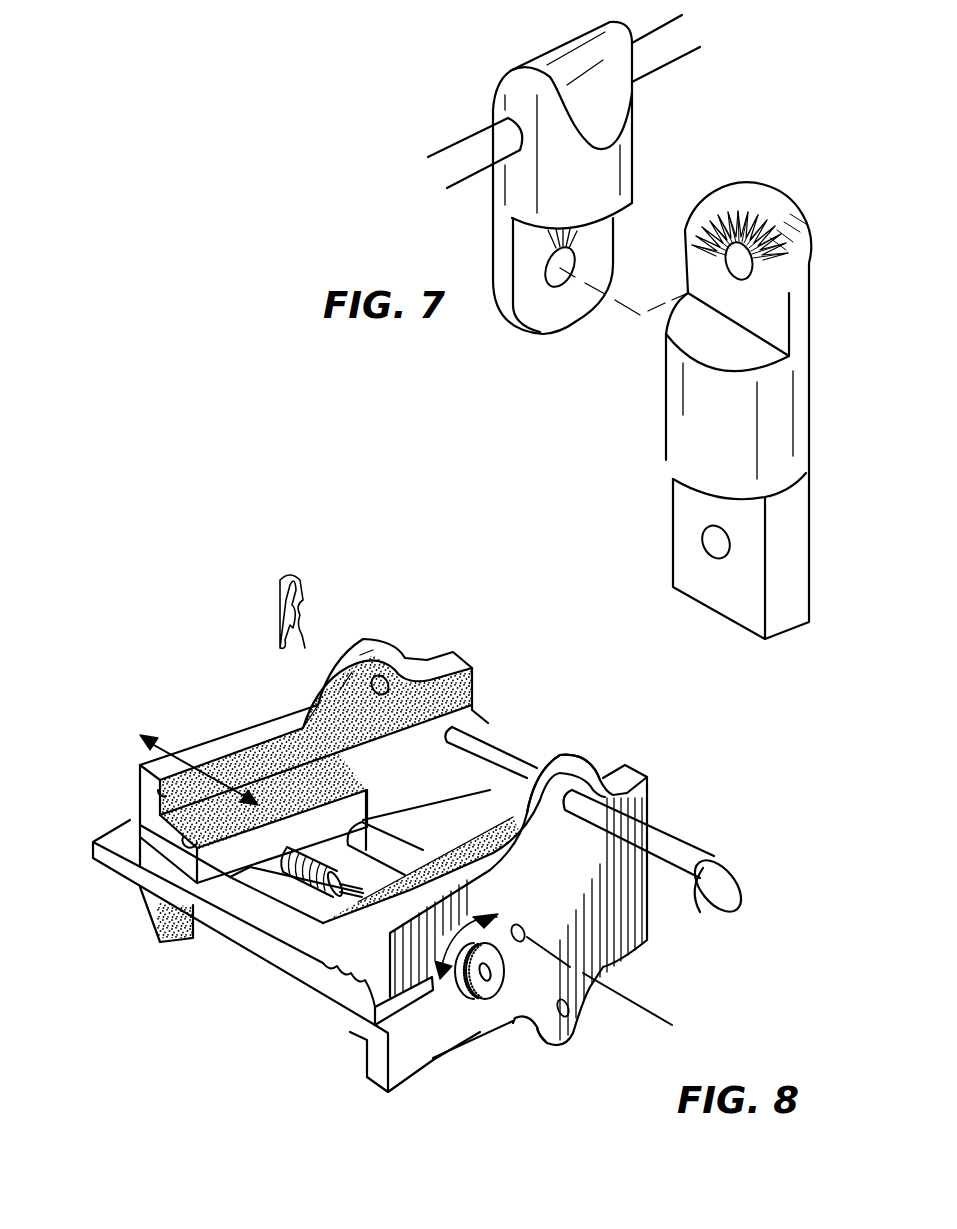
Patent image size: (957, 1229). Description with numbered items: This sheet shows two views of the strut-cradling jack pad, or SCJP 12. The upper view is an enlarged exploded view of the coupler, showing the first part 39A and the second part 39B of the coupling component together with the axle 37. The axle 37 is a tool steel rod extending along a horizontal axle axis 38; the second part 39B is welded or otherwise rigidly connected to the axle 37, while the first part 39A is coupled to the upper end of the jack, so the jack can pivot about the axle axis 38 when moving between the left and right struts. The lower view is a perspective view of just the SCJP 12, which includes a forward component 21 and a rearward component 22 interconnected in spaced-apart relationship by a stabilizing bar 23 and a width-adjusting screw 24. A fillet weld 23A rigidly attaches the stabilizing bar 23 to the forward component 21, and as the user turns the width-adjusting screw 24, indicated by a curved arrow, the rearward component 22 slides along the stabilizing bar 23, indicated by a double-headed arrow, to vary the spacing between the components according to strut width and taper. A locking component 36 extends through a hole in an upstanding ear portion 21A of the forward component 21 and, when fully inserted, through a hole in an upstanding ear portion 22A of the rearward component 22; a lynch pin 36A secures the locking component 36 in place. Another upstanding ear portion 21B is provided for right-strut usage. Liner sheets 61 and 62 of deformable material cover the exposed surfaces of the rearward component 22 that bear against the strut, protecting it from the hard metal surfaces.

In FIG. 8, the SCJP 12 is at (150, 562).
In FIG. 8, the forward component 21 is at (640, 768).
In FIG. 8, the upstanding ear portion 21A is at (570, 757).
In FIG. 8, the upstanding ear portion 21B is at (550, 1045).
In FIG. 8, the rearward component 22 is at (458, 652).
In FIG. 8, the upstanding ear portion 22A is at (365, 643).
In FIG. 8, the stabilizing bar 23 is at (105, 860).
In FIG. 8, the fillet weld 23A is at (347, 977).
In FIG. 8, the width-adjusting screw 24 is at (480, 990).
In FIG. 8, the locking component 36 is at (737, 887).
In FIG. 8, the lynch pin 36A is at (288, 575).
In FIG. 7, the axle 37 is at (450, 147).
In FIG. 8, the axle axis 38 is at (663, 1017).
In FIG. 7, the first part 39A is at (771, 196).
In FIG. 7, the second part 39B is at (507, 75).
In FIG. 8, the liner sheet 61 is at (160, 795).
In FIG. 8, the liner sheet 62 is at (200, 838).